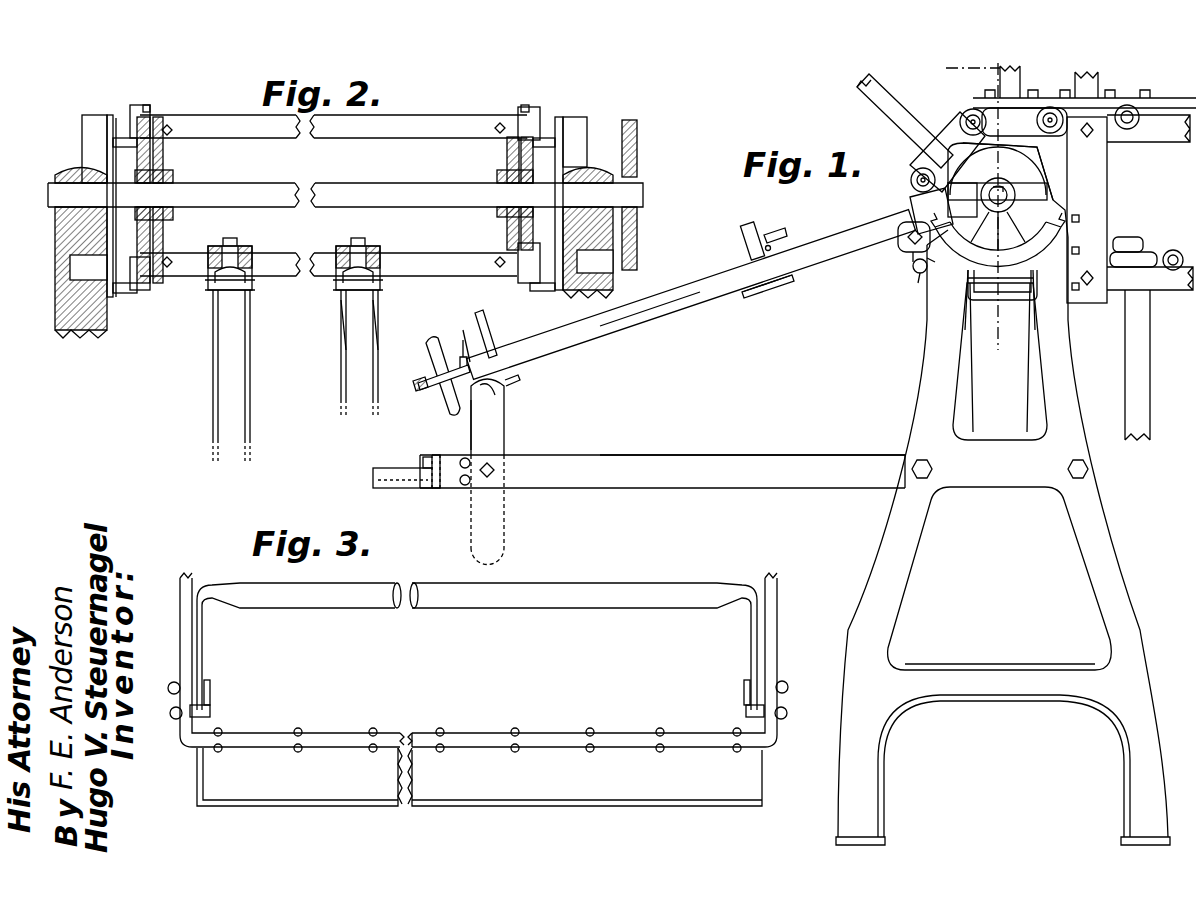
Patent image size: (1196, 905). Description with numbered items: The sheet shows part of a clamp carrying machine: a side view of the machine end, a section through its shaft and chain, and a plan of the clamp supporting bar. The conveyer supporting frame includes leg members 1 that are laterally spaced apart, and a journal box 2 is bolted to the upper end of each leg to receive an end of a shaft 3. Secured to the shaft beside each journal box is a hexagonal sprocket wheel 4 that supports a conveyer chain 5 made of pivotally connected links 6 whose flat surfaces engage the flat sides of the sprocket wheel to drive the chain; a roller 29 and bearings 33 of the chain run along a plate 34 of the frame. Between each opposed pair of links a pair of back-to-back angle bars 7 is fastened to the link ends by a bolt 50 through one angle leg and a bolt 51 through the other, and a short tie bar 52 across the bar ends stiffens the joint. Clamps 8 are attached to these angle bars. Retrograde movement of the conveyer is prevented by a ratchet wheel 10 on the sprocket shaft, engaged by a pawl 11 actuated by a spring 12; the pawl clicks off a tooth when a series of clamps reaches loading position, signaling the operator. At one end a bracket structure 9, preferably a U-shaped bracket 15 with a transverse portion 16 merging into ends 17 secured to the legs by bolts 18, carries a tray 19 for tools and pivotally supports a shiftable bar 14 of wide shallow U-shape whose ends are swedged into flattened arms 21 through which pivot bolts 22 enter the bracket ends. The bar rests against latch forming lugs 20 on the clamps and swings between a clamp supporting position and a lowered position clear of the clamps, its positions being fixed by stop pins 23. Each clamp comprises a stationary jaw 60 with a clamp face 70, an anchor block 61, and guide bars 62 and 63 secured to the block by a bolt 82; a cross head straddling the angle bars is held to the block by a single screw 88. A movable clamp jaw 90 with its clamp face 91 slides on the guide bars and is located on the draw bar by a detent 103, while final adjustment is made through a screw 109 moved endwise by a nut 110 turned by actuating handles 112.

In FIG. 2, the leg member 1 is at (626, 290).
In FIG. 1, the leg member 1 is at (876, 590).
In FIG. 2, the journal box 2 is at (62, 170).
In FIG. 1, the journal box 2 is at (998, 185).
In FIG. 2, the shaft 3 is at (345, 195).
In FIG. 1, the shaft 3 is at (1008, 200).
In FIG. 2, the sprocket wheel 4 is at (168, 160).
In FIG. 1, the sprocket wheel 4 is at (1052, 178).
In FIG. 2, the conveyer chain 5 is at (133, 294).
In FIG. 1, the conveyer chain 5 is at (1133, 249).
In FIG. 2, the link 6 is at (150, 108).
In FIG. 1, the link 6 is at (1128, 240).
In FIG. 2, the angle bar 7 is at (350, 128).
In FIG. 2, the clamp 8 is at (295, 376).
In FIG. 1, the clamp 8 is at (817, 248).
In FIG. 2, the bracket structure 9 is at (752, 441).
In FIG. 1, the bracket structure 9 is at (802, 458).
In FIG. 2, the ratchet wheel 10 is at (637, 128).
In FIG. 1, the ratchet wheel 10 is at (968, 258).
In FIG. 1, the pawl 11 is at (905, 255).
In FIG. 1, the spring 12 is at (905, 270).
In FIG. 2, the shiftable bar 14 is at (498, 390).
In FIG. 3, the shiftable bar 14 is at (477, 646).
In FIG. 3, the U-shaped bracket 15 is at (477, 728).
In FIG. 2, the transverse portion 16 is at (440, 490).
In FIG. 3, the transverse portion 16 is at (465, 732).
In FIG. 2, the bracket end 17 is at (662, 471).
In FIG. 3, the bracket end 17 is at (180, 632).
In FIG. 1, the bolt 18 is at (925, 470).
In FIG. 2, the tray 19 is at (405, 478).
In FIG. 3, the tray 19 is at (479, 777).
In FIG. 2, the latch forming lug 20 is at (518, 378).
In FIG. 2, the flattened arm 21 is at (500, 425).
In FIG. 3, the flattened arm 21 is at (203, 653).
In FIG. 2, the pivot bolt 22 is at (495, 472).
In FIG. 3, the pivot bolt 22 is at (168, 686).
In FIG. 2, the stop pin 23 is at (460, 462).
In FIG. 3, the stop pin 23 is at (212, 712).
In FIG. 1, the roller 29 is at (910, 185).
In FIG. 2, the bearing 33 is at (138, 105).
In FIG. 1, the bearing 33 is at (1135, 106).
In FIG. 2, the plate 34 is at (552, 310).
In FIG. 1, the plate 34 is at (1130, 209).
In FIG. 1, the bolt 50 is at (980, 108).
In FIG. 2, the bolt 51 is at (172, 258).
In FIG. 1, the tie bar 52 is at (915, 132).
In FIG. 2, the stationary jaw 60 is at (463, 340).
In FIG. 2, the anchor block 61 is at (338, 262).
In FIG. 2, the guide bar 62 is at (380, 305).
In FIG. 1, the guide bar 62 is at (640, 316).
In FIG. 2, the guide bar 63 is at (342, 358).
In FIG. 2, the clamp face 70 is at (495, 334).
In FIG. 2, the bolt 82 is at (345, 292).
In FIG. 2, the screw 88 is at (366, 242).
In FIG. 1, the movable clamp jaw 90 is at (748, 224).
In FIG. 1, the clamp face 91 is at (748, 243).
In FIG. 1, the detent 103 is at (782, 230).
In FIG. 2, the screw 109 is at (418, 395).
In FIG. 2, the nut 110 is at (464, 345).
In FIG. 2, the actuating handle 112 is at (430, 352).